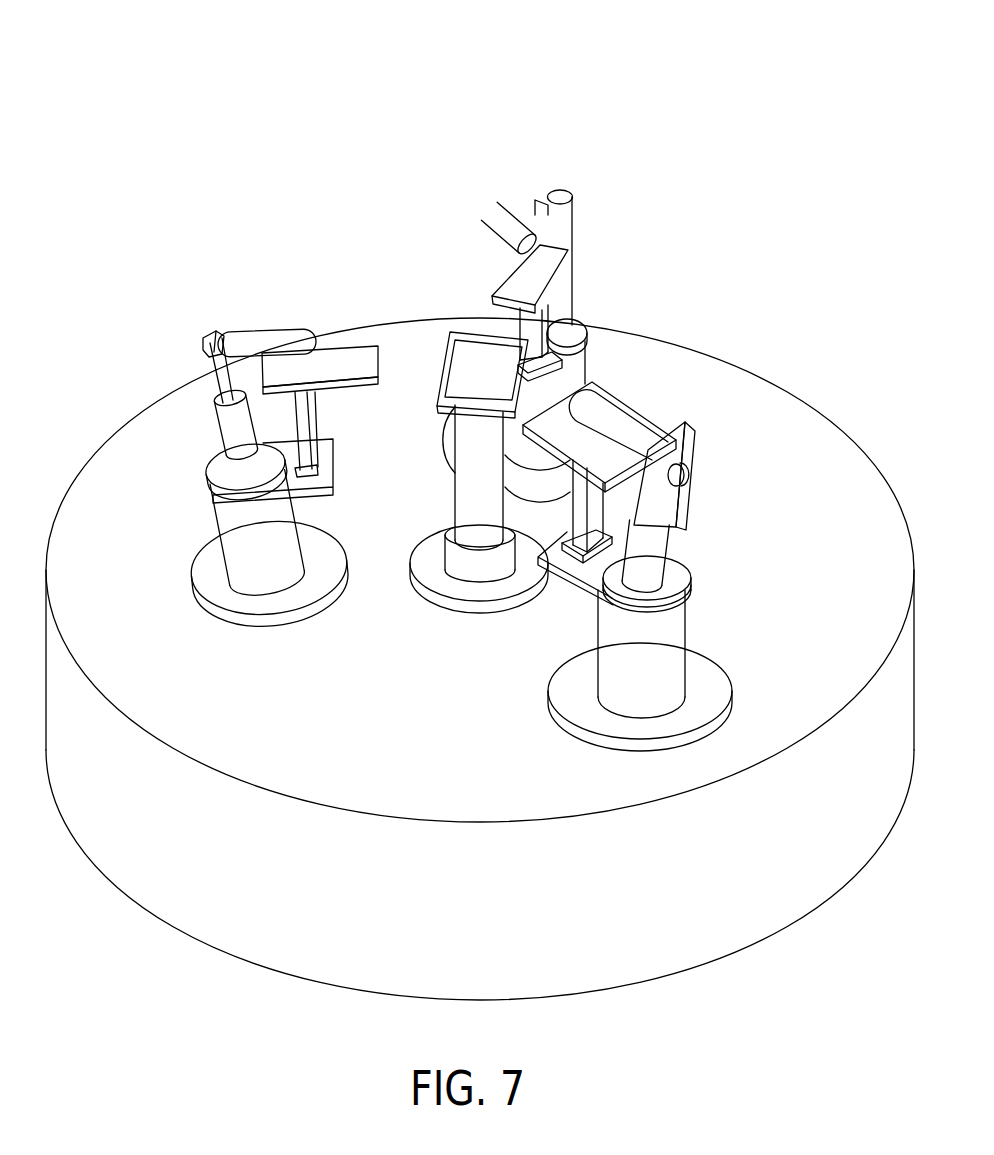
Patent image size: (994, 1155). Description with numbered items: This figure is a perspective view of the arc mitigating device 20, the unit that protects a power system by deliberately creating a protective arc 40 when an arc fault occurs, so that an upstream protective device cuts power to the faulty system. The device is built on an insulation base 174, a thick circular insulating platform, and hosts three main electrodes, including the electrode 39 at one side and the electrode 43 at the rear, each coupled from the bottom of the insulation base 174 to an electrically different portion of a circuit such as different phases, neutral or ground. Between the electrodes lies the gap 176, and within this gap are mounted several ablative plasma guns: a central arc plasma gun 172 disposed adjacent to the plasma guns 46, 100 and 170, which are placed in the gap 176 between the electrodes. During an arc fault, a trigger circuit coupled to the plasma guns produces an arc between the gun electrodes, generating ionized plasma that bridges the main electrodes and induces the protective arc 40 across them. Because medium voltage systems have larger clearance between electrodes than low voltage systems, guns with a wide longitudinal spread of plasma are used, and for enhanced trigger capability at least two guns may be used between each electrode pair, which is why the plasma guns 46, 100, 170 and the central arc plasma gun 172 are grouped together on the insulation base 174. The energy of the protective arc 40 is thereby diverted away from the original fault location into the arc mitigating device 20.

The arc mitigating device 20 is at (773, 72).
The electrode 39 is at (255, 347).
The protective arc 40 is at (632, 427).
The electrode 43 is at (532, 227).
The plasma gun 46 is at (332, 358).
The plasma gun 100 is at (592, 380).
The plasma gun 170 is at (500, 277).
The central arc plasma gun 172 is at (501, 385).
The insulation base 174 is at (486, 919).
The gap 176 is at (508, 325).